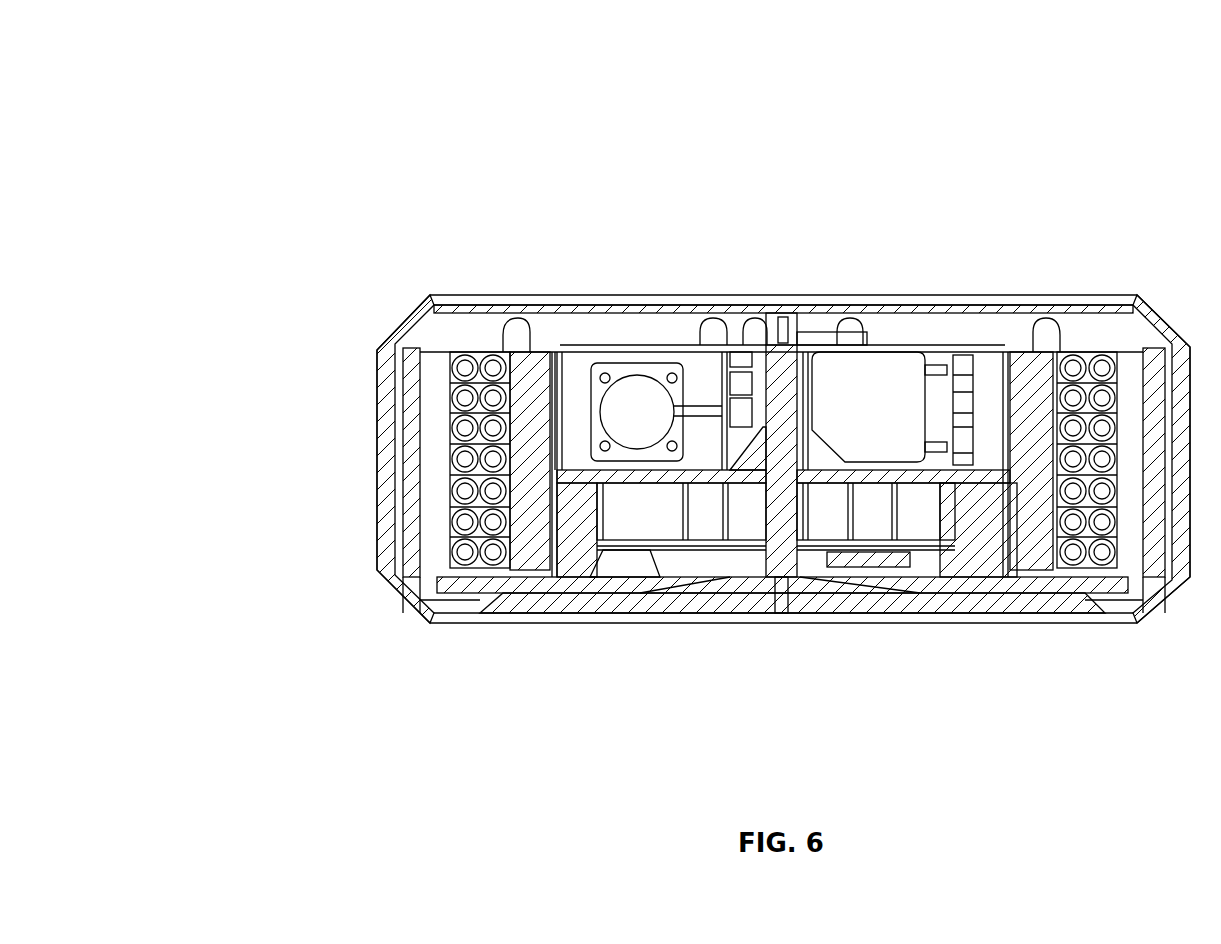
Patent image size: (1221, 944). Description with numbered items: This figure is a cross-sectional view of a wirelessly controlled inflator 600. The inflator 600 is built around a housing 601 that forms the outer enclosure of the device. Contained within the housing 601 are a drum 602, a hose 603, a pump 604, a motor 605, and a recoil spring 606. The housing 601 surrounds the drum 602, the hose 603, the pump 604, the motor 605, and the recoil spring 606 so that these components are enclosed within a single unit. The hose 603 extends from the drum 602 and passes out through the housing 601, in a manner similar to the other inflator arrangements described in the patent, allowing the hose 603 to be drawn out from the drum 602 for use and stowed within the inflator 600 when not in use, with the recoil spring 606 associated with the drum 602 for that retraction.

The inflator 600 is at (232, 100).
The housing 601 is at (519, 297).
The drum 602 is at (1032, 387).
The hose 603 is at (455, 393).
The pump 604 is at (655, 422).
The motor 605 is at (856, 421).
The recoil spring 606 is at (639, 522).